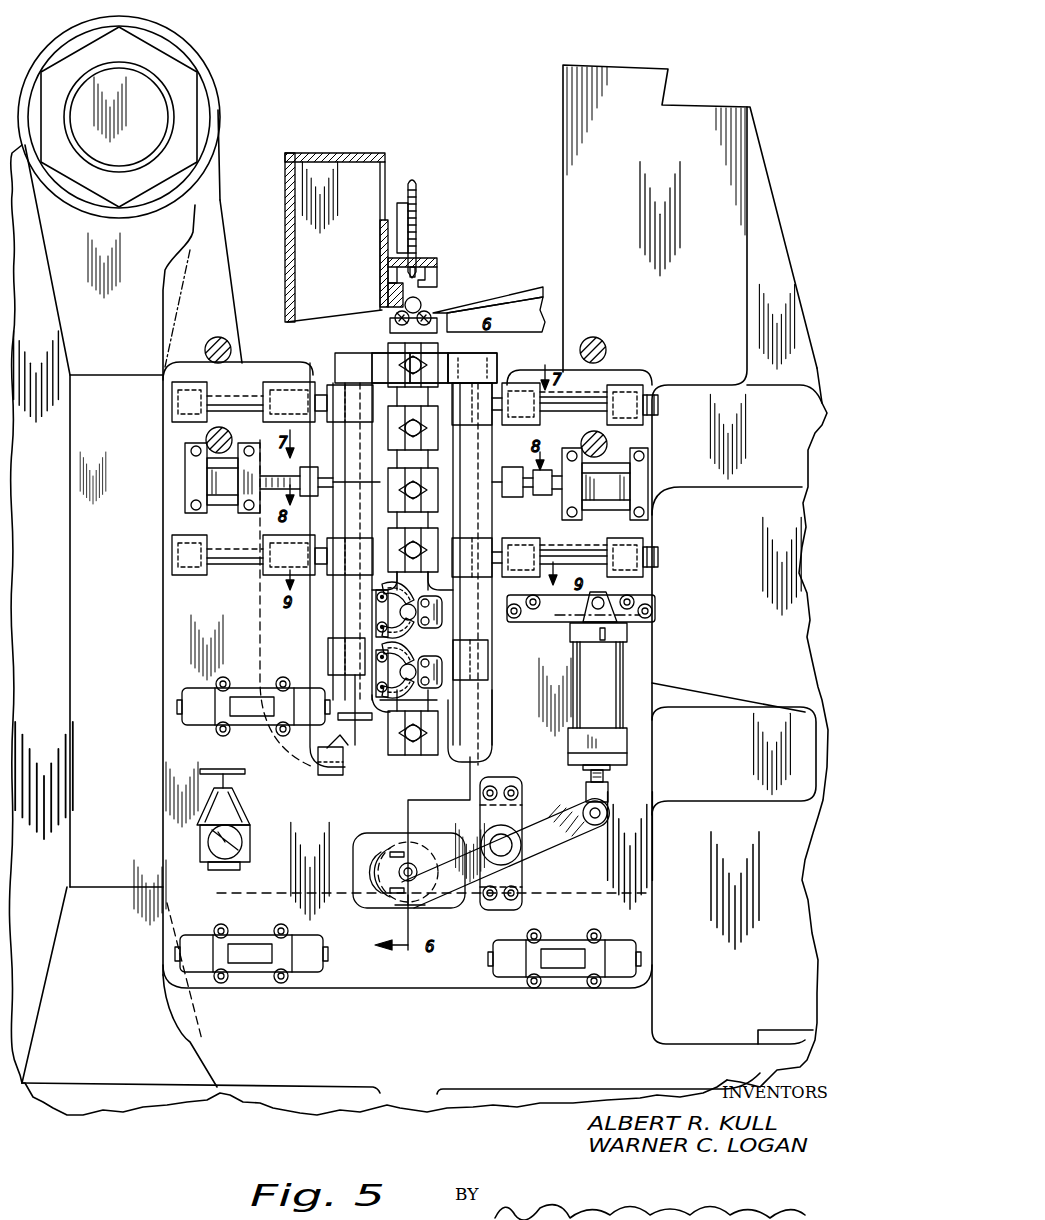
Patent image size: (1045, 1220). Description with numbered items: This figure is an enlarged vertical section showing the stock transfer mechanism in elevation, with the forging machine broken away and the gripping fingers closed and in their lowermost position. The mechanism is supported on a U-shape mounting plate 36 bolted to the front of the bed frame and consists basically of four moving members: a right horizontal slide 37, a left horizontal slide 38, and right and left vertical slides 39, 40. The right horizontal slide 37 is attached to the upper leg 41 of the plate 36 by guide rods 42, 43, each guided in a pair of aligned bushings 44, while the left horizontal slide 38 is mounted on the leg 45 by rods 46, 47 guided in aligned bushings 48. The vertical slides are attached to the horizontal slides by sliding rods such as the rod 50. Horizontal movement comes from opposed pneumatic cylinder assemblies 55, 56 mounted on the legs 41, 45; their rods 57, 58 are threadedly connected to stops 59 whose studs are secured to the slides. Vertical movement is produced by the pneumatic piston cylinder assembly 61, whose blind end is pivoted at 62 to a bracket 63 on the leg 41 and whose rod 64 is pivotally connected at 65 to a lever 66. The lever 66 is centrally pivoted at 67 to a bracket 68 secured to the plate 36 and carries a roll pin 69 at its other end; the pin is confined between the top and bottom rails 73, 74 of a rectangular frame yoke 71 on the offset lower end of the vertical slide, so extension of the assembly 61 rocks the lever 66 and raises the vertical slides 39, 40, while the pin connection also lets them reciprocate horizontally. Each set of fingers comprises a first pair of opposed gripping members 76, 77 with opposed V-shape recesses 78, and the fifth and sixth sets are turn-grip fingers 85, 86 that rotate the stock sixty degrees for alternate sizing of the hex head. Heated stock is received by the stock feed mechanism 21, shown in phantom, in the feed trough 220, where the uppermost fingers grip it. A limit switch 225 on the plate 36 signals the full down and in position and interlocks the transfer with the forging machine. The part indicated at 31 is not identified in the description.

The stock feed mechanism 21 is at (432, 222).
The feed trough 220 is at (437, 300).
The V-shape recesses 78 is at (395, 362).
The gripping member 76 is at (422, 358).
The gripping member 77 is at (495, 337).
The mounting bolt 31 is at (590, 345).
The aligned bushings 44 is at (633, 390).
The guide rod 46 is at (250, 383).
The cylinder rod 58 is at (293, 476).
The stops 59 is at (305, 468).
The leg of mounting plate 45 is at (187, 468).
The pneumatic cylinder assembly 56 is at (210, 480).
The left horizontal slide 38 is at (333, 512).
The right horizontal slide 37 is at (470, 516).
The cylinder rod 57 is at (545, 470).
The pneumatic cylinder assembly 55 is at (622, 490).
The guide rod 42 is at (655, 407).
The upper leg of mounting plate 41 is at (648, 445).
The guide rod 43 is at (655, 553).
The aligned bushings 48 is at (191, 578).
The guide rod 47 is at (236, 578).
The turn-grip fingers 85 is at (342, 620).
The turn-grip fingers 86 is at (360, 688).
The sliding rod 50 is at (478, 628).
The pivot 62 is at (590, 600).
The bracket 63 is at (652, 606).
The pneumatic piston cylinder assembly 61 is at (615, 670).
The right vertical slide 39 is at (460, 712).
The cylinder rod 64 is at (602, 785).
The limit switch 225 is at (318, 766).
The left vertical slide 40 is at (358, 796).
The top rail 73 is at (412, 855).
The U-shape mounting plate 36 is at (640, 838).
The pivot connection 65 is at (600, 826).
The lever 66 is at (548, 840).
The central pivot 67 is at (508, 850).
The rectangular frame yoke 71 is at (370, 900).
The roll pin 69 is at (404, 906).
The bottom rail 74 is at (425, 906).
The bracket 68 is at (495, 912).